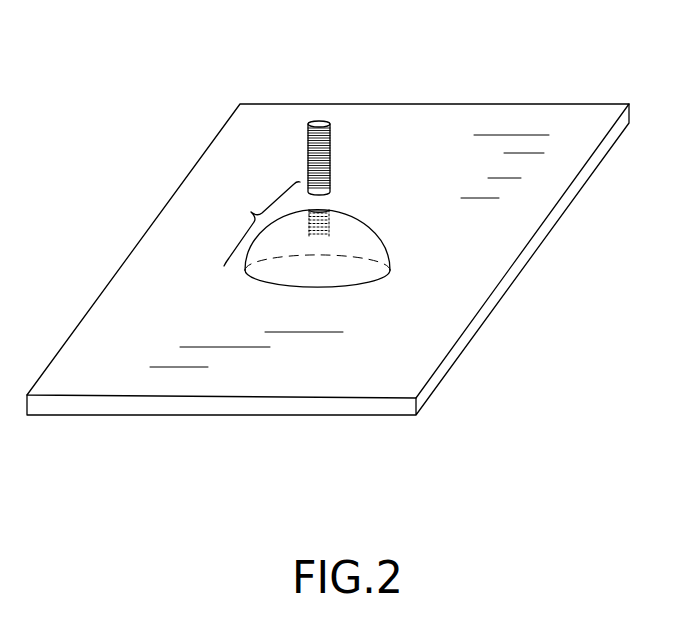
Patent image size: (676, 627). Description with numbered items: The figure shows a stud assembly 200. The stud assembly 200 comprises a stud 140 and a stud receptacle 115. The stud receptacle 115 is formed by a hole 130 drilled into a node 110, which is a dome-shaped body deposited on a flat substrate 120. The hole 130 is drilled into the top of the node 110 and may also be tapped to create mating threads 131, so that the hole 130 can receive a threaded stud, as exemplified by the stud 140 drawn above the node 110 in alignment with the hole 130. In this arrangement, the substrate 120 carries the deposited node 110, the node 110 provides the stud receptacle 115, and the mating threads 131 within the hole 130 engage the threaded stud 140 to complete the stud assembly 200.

The stud assembly 200 is at (328, 272).
The node 110 is at (391, 272).
The stud receptacle 115 is at (261, 224).
The substrate 120 is at (362, 415).
The hole 130 is at (327, 216).
The mating threads 131 is at (325, 218).
The stud 140 is at (308, 168).